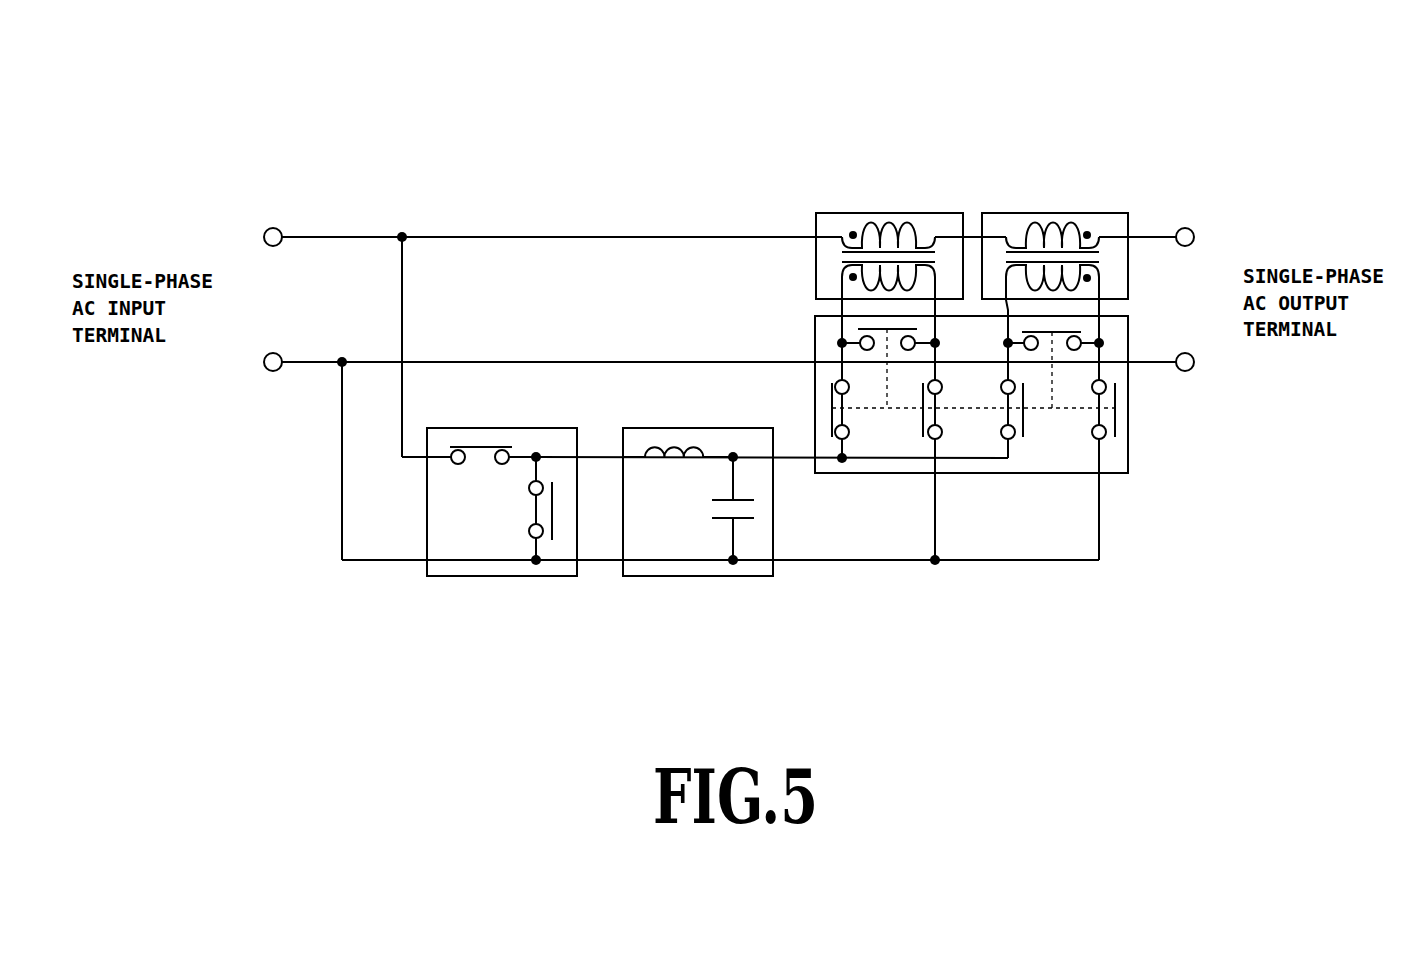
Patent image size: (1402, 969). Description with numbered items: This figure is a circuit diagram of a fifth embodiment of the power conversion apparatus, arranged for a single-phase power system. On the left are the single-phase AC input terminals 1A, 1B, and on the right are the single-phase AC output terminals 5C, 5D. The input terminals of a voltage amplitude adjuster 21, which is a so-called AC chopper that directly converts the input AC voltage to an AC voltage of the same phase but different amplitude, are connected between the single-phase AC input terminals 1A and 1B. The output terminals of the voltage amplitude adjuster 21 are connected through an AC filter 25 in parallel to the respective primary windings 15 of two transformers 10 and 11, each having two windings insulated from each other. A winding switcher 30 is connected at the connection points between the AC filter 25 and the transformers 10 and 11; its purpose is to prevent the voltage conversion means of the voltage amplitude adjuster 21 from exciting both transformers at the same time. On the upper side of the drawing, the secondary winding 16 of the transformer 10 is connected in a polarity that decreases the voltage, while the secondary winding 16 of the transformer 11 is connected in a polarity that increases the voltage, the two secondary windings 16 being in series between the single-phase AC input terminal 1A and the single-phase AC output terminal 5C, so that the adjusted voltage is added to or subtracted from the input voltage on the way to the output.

The single-phase AC input terminal 1A is at (255, 242).
The single-phase AC input terminal 1B is at (255, 367).
The single-phase AC output terminal 5C is at (1204, 241).
The single-phase AC output terminal 5D is at (1204, 366).
The transformer 10 is at (829, 213).
The transformer 11 is at (1037, 213).
The primary winding 15 is at (825, 285).
The secondary winding 16 is at (862, 221).
The voltage amplitude adjuster 21 is at (488, 576).
The AC filter 25 is at (700, 576).
The winding switcher 30 is at (1112, 473).